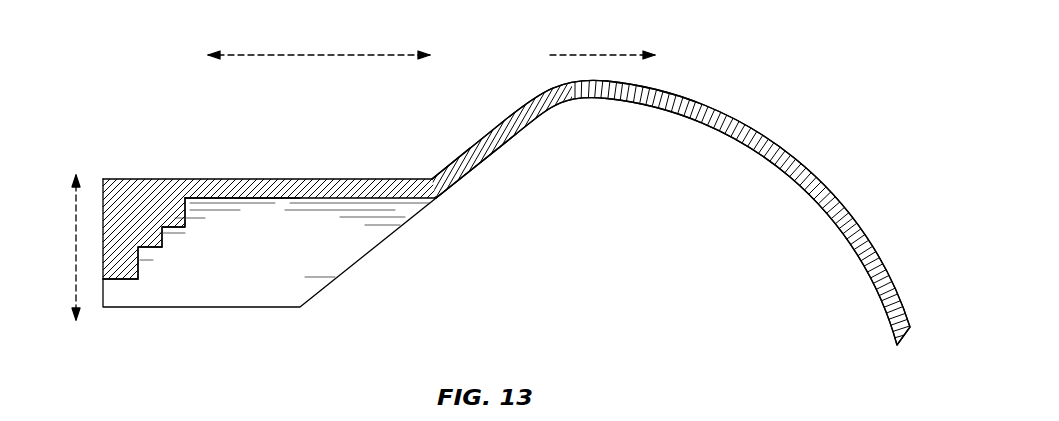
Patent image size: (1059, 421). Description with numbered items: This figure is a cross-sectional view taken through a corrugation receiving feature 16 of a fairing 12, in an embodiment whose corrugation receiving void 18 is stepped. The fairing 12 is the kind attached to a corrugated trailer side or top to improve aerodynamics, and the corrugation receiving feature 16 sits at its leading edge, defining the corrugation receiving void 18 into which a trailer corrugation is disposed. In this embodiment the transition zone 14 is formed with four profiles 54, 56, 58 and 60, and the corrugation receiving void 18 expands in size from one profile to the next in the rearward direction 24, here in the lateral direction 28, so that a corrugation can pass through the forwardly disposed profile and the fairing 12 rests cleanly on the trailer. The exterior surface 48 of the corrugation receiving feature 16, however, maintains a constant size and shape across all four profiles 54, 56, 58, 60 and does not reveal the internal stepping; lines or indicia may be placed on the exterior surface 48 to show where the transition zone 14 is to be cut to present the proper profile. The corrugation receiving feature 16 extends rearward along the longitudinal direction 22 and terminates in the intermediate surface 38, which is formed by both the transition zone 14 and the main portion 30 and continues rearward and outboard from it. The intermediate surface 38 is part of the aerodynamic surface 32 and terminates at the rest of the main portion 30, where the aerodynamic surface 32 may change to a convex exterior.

The fairing 12 is at (767, 138).
The transition zone 14 is at (207, 308).
The corrugation receiving feature 16 is at (233, 180).
The corrugation receiving void 18 is at (148, 262).
The longitudinal direction 22 is at (318, 55).
The rearward direction 24 is at (603, 55).
The lateral direction 28 is at (75, 247).
The main portion 30 is at (702, 103).
The aerodynamic surface 32 is at (502, 122).
The intermediate surface 38 is at (448, 167).
The exterior surface 48 is at (142, 178).
The profile 54 is at (113, 267).
The profile 56 is at (150, 245).
The profile 58 is at (178, 222).
The profile 60 is at (203, 182).